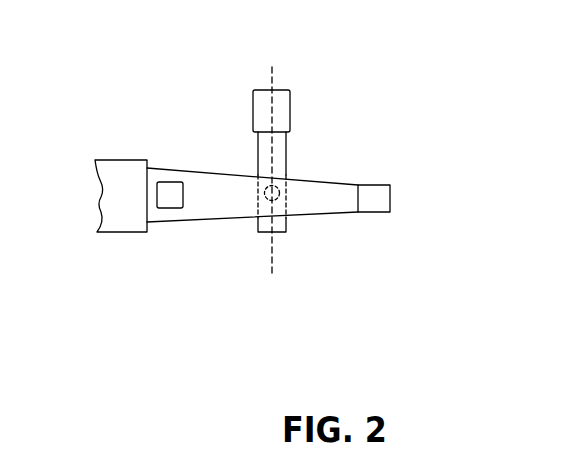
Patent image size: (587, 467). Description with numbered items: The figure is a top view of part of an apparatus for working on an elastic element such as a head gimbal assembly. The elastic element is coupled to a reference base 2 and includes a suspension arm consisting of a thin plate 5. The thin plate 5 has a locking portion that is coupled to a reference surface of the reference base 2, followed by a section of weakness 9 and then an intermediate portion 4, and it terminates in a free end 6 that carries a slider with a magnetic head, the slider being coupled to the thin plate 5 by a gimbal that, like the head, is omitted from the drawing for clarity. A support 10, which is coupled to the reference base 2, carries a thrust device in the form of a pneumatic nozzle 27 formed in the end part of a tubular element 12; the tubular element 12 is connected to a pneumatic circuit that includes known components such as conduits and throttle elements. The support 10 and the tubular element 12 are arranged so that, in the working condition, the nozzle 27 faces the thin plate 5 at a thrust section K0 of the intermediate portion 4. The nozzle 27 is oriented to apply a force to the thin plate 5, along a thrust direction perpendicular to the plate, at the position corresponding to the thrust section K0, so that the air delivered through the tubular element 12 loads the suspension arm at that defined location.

The reference base 2 is at (122, 172).
The intermediate portion 4 is at (220, 205).
The thin plate 5 is at (175, 175).
The free end 6 is at (378, 198).
The section of weakness 9 is at (195, 213).
The support 10 is at (282, 100).
The tubular element 12 is at (281, 222).
The pneumatic nozzle 27 is at (278, 188).
The thrust section K0 is at (273, 262).